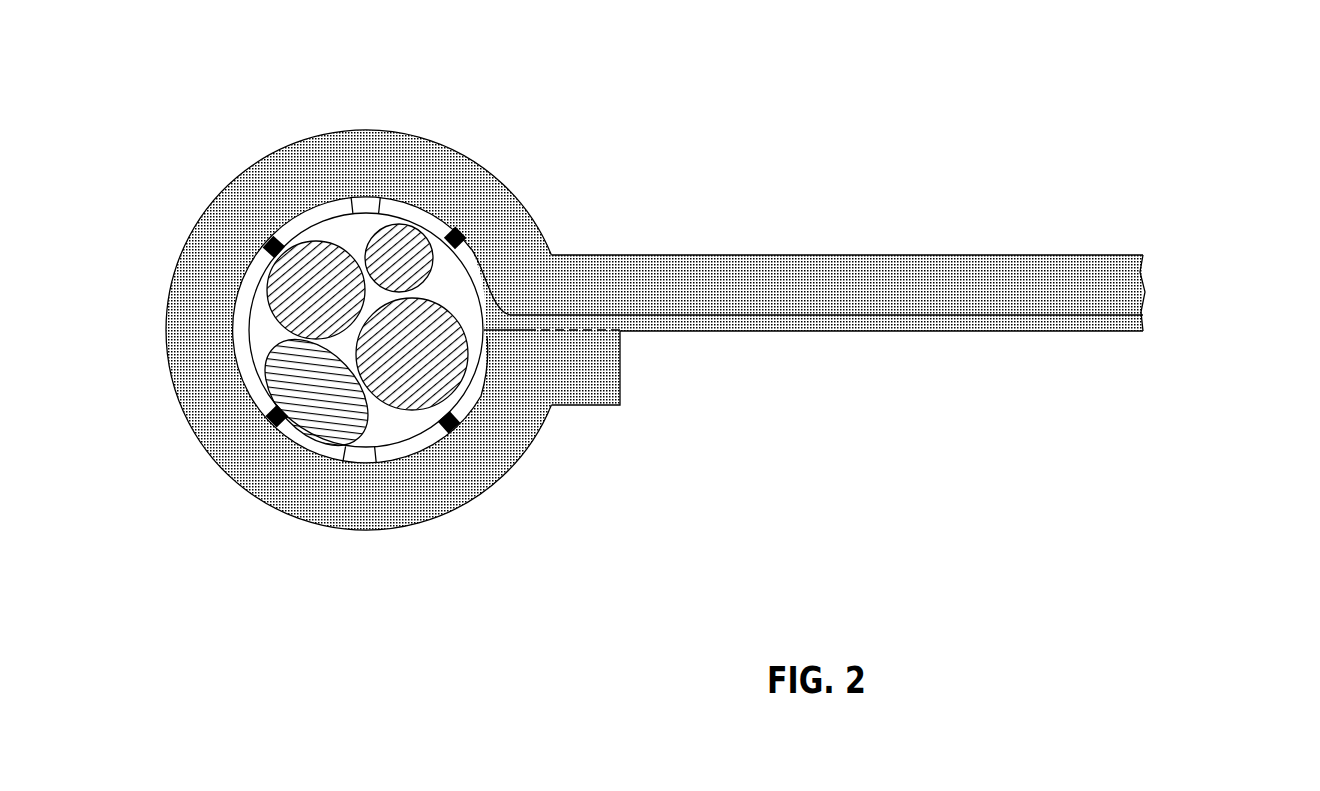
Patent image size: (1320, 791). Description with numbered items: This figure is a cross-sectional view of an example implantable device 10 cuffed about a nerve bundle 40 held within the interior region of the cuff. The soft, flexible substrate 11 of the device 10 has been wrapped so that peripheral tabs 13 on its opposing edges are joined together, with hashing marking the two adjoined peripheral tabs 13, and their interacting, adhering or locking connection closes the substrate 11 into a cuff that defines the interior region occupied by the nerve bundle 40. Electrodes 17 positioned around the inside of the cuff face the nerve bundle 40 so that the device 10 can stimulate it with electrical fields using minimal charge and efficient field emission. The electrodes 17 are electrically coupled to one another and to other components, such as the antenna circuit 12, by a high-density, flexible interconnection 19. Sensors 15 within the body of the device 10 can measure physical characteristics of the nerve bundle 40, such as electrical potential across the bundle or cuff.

The implantable device 10 is at (456, 20).
The substrate 11 is at (627, 255).
The antenna circuit 12 is at (1305, 289).
The peripheral tabs 13 is at (535, 330).
The sensors 15 is at (352, 205).
The electrodes 17 is at (452, 437).
The interconnection 19 is at (893, 315).
The nerve bundle 40 is at (385, 420).